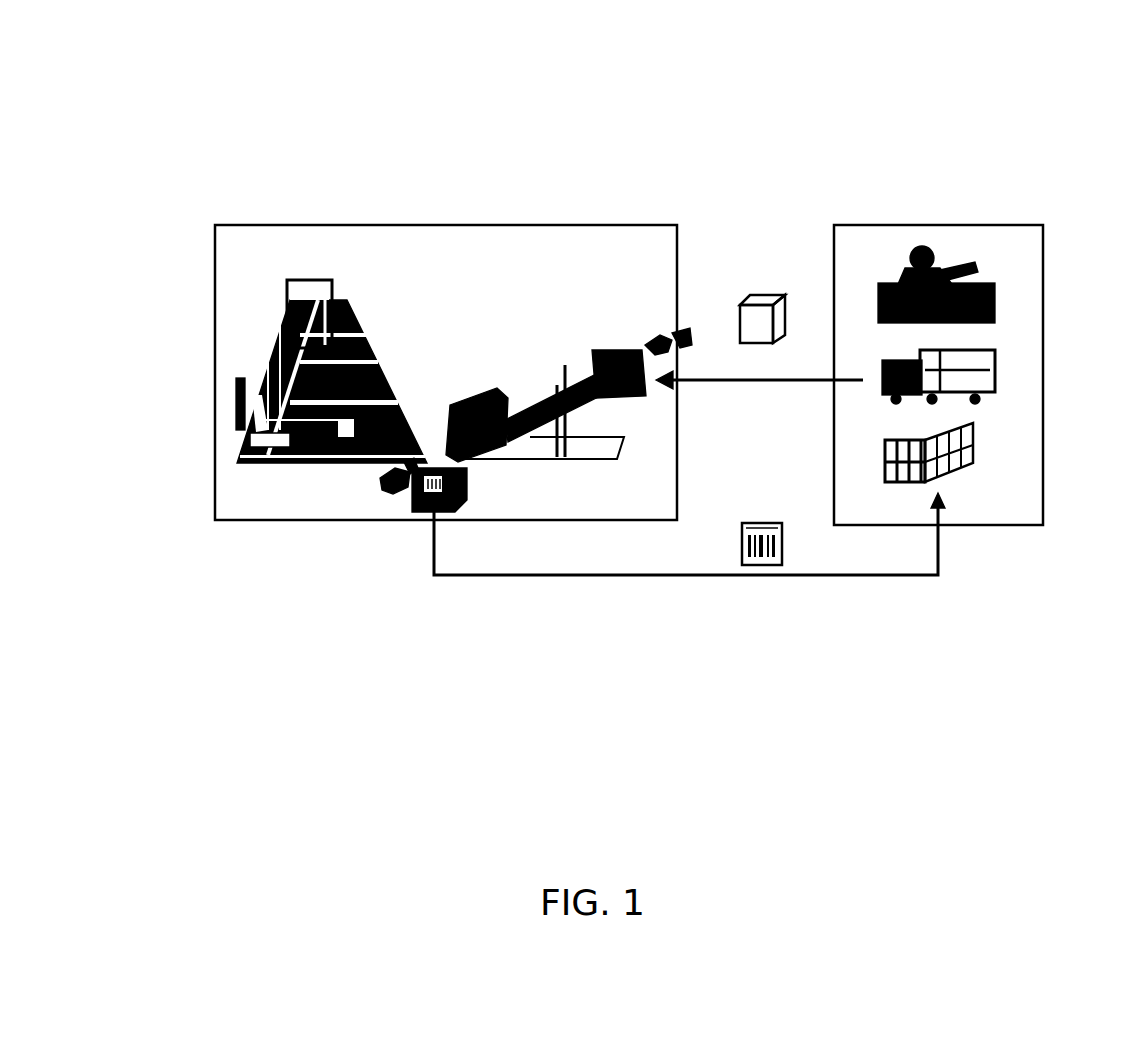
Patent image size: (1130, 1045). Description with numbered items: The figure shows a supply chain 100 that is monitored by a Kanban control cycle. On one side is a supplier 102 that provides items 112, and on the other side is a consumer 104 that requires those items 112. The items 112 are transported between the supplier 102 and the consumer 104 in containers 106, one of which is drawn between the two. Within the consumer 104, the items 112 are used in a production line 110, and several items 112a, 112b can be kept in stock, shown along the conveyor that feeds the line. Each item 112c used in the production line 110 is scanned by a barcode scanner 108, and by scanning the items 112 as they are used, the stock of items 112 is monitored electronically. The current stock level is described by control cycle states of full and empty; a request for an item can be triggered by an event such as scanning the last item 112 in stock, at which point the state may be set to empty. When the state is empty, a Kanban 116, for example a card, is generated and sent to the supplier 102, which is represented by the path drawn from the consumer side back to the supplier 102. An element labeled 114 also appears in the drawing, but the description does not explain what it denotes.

The supply chain 100 is at (196, 185).
The supplier 102 is at (1030, 222).
The consumer 104 is at (514, 224).
The containers 106 is at (767, 299).
The barcode scanner 108 is at (390, 485).
The production line 110 is at (330, 278).
The items 112 is at (657, 640).
The item 112a is at (490, 395).
The item 112b is at (625, 350).
The item 112c is at (418, 517).
The reader device 114 is at (462, 516).
The Kanban 116 is at (768, 520).